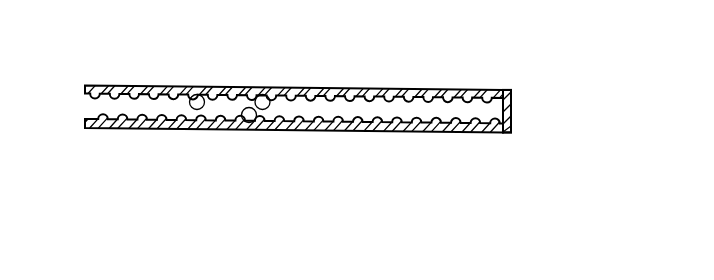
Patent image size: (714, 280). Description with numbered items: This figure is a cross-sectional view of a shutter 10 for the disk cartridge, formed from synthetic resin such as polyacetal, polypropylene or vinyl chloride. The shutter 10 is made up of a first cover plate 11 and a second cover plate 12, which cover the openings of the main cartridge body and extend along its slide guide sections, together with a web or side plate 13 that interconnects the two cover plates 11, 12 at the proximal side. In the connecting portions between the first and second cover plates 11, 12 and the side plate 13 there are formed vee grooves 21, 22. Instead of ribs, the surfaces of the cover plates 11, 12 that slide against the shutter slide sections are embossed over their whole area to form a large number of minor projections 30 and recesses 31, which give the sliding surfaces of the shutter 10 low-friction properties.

The shutter 10 is at (420, 88).
The first cover plate 11 is at (143, 86).
The second cover plate 12 is at (130, 129).
The side plate 13 is at (512, 112).
The vee groove 21 is at (505, 89).
The vee groove 22 is at (506, 134).
The minor projections 30 is at (266, 95).
The recesses 31 is at (190, 95).